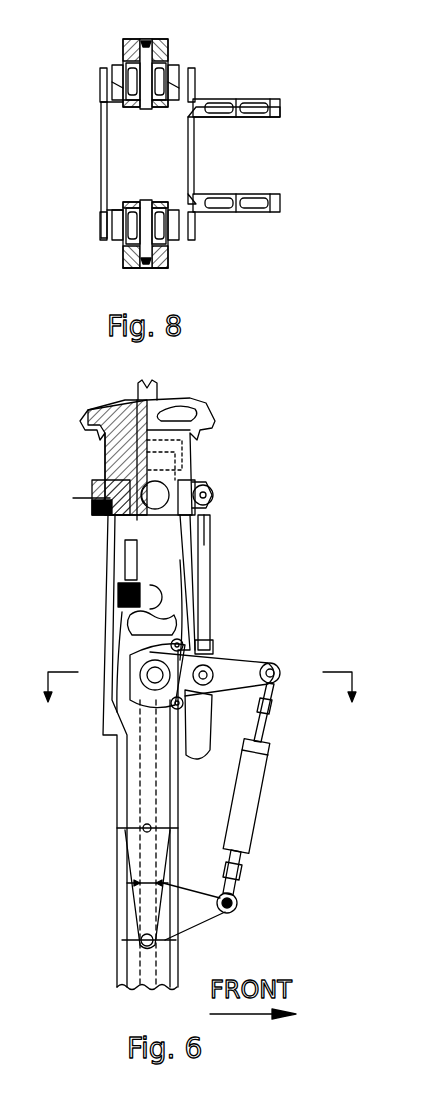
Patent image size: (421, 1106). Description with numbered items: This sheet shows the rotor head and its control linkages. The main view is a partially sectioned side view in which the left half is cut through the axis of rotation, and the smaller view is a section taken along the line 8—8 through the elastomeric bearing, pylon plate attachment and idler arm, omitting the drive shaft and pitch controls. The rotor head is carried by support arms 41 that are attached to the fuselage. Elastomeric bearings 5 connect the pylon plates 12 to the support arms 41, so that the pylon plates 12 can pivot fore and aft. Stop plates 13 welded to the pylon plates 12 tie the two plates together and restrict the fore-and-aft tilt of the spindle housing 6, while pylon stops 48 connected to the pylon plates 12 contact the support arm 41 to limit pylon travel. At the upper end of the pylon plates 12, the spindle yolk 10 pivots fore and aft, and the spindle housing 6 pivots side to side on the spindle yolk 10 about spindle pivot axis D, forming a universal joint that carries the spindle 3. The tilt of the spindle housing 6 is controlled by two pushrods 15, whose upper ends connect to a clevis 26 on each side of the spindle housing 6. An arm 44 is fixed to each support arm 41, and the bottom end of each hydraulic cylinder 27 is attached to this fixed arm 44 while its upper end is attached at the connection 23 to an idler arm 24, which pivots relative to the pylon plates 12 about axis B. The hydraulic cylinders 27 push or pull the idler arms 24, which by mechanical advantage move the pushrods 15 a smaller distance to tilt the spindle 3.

In FIG. 6, the spindle 3 is at (190, 400).
In FIG. 8, the elastomeric bearing 5 is at (170, 250).
In FIG. 6, the spindle housing 6 is at (195, 462).
In FIG. 6, the section line 8— 8 is at (62, 978).
In FIG. 6, the spindle yolk 10 is at (102, 526).
In FIG. 8, the pylon plate 12 is at (100, 125).
In FIG. 6, the stop plate 13 is at (108, 578).
In FIG. 6, the pushrod 15 is at (213, 580).
In FIG. 6, the connecting pin 23 is at (272, 700).
In FIG. 8, the idler arm 24 is at (248, 116).
In FIG. 6, the idler arm 24 is at (245, 660).
In FIG. 6, the clevis 26 is at (214, 490).
In FIG. 6, the hydraulic cylinder 27 is at (262, 811).
In FIG. 8, the support arm 41 is at (123, 268).
In FIG. 6, the support arm 41 is at (127, 843).
In FIG. 6, the arm 44 is at (198, 930).
In FIG. 6, the pylon stop 48 is at (207, 753).
In FIG. 6, the axis B is at (152, 655).
In FIG. 6, the spindle pivot axis D is at (78, 496).